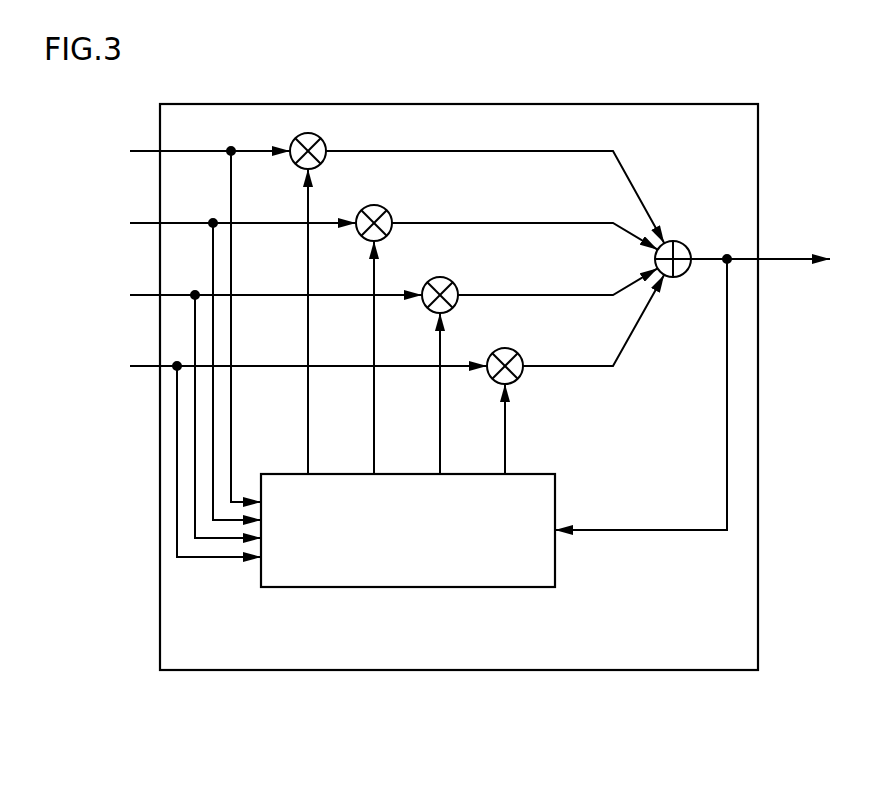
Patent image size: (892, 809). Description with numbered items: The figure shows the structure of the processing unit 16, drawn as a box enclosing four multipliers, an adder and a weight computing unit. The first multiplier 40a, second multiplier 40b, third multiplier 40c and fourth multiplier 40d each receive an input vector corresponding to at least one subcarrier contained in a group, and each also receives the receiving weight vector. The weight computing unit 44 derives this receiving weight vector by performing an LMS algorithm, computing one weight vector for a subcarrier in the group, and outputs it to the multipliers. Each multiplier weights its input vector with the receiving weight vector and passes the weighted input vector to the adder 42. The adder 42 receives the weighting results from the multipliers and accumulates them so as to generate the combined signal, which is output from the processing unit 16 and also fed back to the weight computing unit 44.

The processing unit 16 is at (493, 771).
The first multiplier 40a is at (320, 137).
The second multiplier 40b is at (386, 208).
The third multiplier 40c is at (450, 281).
The fourth multiplier 40d is at (515, 352).
The adder 42 is at (679, 243).
The weight computing unit 44 is at (530, 473).